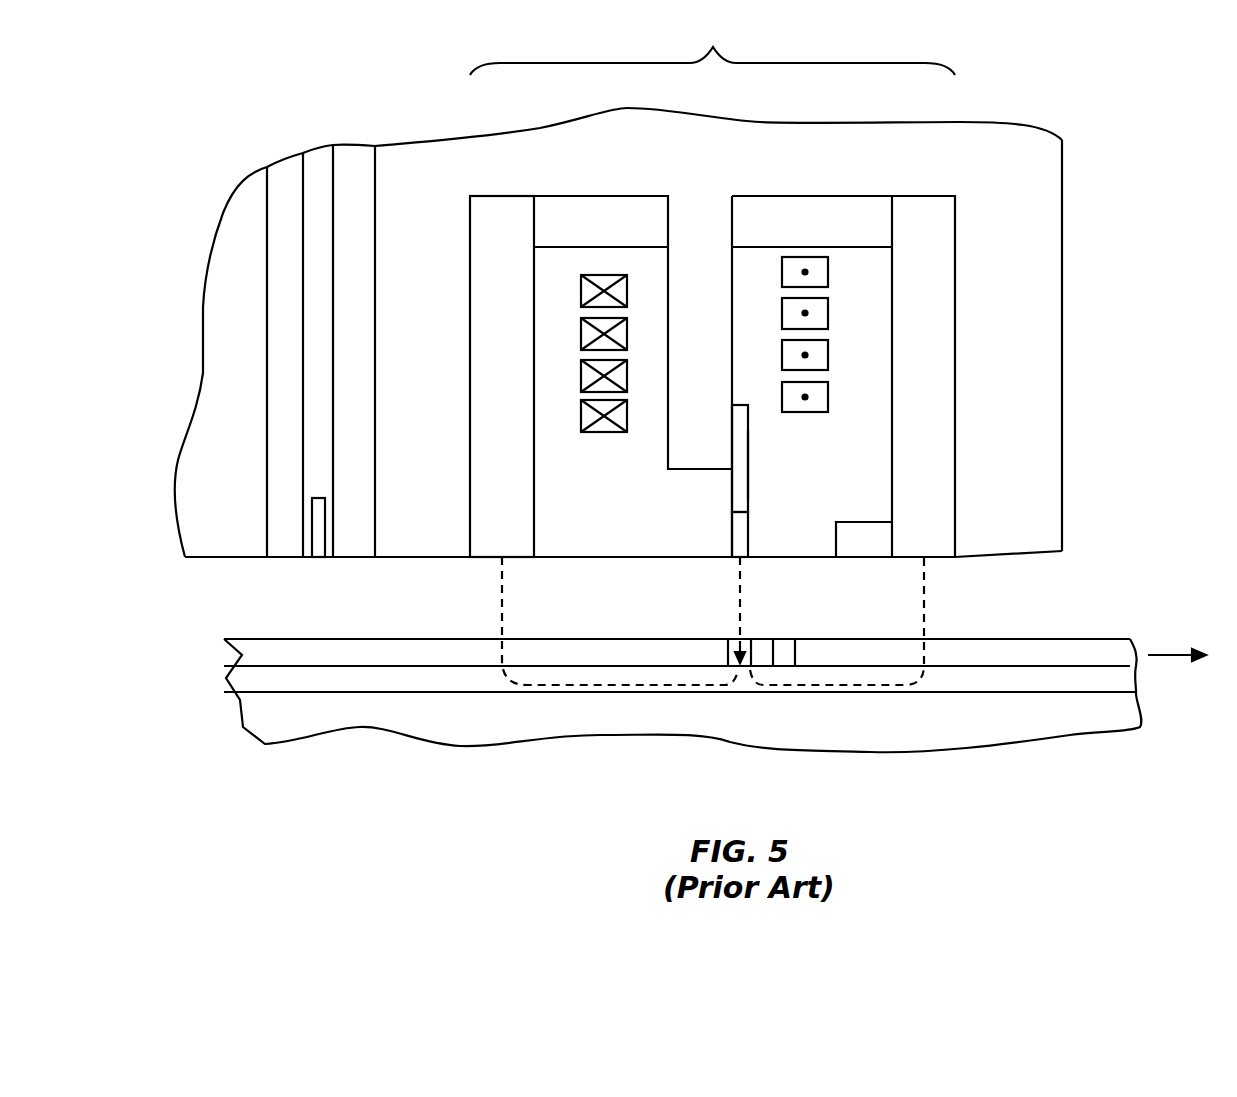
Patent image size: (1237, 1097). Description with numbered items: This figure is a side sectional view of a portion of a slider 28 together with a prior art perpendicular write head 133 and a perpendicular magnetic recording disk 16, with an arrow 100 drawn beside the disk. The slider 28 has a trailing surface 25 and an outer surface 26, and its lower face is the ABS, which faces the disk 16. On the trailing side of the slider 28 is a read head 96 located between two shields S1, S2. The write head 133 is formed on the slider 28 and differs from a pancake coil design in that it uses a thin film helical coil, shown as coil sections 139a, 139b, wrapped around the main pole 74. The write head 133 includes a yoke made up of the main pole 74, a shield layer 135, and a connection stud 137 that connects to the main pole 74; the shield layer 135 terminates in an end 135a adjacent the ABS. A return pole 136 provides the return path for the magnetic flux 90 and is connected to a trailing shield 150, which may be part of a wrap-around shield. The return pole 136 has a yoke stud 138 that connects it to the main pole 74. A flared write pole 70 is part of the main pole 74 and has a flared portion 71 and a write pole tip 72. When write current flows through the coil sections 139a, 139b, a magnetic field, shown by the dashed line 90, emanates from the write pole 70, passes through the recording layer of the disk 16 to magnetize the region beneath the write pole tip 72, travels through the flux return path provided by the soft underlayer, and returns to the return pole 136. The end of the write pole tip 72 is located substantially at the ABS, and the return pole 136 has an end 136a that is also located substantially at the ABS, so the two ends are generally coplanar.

The magnetic recording disk 16 is at (312, 752).
The trailing surface 25 is at (258, 245).
The first shield S1 is at (277, 525).
The second shield S2 is at (360, 537).
The read head 96 is at (318, 497).
The outer surface 26 is at (1065, 362).
The slider 28 is at (1043, 215).
The air bearing surface ABS is at (1045, 559).
The perpendicular write head 133 is at (712, 44).
The shield layer 135 is at (470, 272).
The first return pole tip at ABS 135a is at (486, 558).
The return pole 136 is at (942, 387).
The end of return pole 136a is at (938, 561).
The connection stud 137 is at (578, 206).
The yoke stud 138 is at (764, 206).
The coil section 139a is at (598, 277).
The coil section 139b is at (830, 278).
The main pole 74 is at (727, 288).
The flared write pole 70 is at (737, 405).
The flared portion 71 is at (740, 480).
The write pole tip 72 is at (740, 538).
The trailing shield 150 is at (846, 535).
The magnetic flux 90 is at (548, 688).
The direction of disk motion 100 is at (1175, 657).